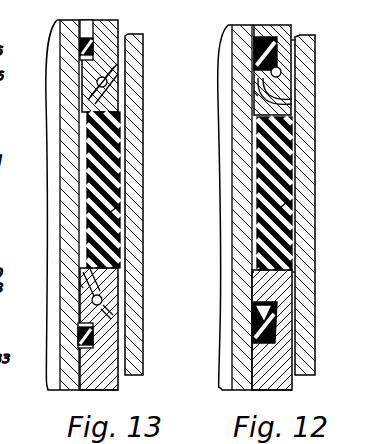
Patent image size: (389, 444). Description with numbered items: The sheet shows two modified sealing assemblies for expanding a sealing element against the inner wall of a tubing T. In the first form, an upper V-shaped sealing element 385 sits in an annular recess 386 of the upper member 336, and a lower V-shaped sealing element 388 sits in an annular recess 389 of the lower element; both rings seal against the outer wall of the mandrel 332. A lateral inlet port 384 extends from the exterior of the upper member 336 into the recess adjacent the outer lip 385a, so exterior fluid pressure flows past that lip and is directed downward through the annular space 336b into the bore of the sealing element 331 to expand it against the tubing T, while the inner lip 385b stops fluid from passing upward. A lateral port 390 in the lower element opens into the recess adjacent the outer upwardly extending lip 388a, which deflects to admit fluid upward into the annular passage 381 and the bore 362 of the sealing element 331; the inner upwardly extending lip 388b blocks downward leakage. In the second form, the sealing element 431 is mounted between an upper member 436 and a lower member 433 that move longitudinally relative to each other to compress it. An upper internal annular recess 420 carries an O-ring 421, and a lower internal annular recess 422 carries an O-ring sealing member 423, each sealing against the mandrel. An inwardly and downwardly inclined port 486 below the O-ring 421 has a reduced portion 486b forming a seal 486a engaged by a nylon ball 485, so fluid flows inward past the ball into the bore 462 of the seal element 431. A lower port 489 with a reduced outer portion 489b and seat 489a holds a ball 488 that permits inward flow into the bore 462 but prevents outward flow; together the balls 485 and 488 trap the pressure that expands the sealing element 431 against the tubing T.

In FIG. 13, the upper internal annular recess 420 is at (82, 34).
In FIG. 13, the O-ring 421 is at (84, 47).
In FIG. 13, the upper member 436 is at (84, 68).
In FIG. 13, the seal 486a is at (100, 83).
In FIG. 13, the reduced portion of port 486b is at (110, 78).
In FIG. 13, the ball 485 is at (108, 83).
In FIG. 13, the port 486 is at (90, 100).
In FIG. 13, the bore of seal element 462 is at (90, 150).
In FIG. 13, the sealing element 431 is at (113, 212).
In FIG. 13, the lower member 433 is at (107, 358).
In FIG. 13, the O-ring sealing member 423 is at (78, 328).
In FIG. 13, the lower internal annular recess 422 is at (78, 337).
In FIG. 13, the lower port 489 is at (82, 272).
In FIG. 13, the ball 488 is at (78, 285).
In FIG. 13, the seat 489a is at (80, 295).
In FIG. 13, the reduced outer portion of port 489b is at (112, 312).
In FIG. 13, the tubing T is at (140, 163).
In FIG. 12, the tubing T is at (308, 146).
In FIG. 12, the mandrel 332 is at (232, 173).
In FIG. 12, the upper V-shaped sealing element 385 is at (272, 30).
In FIG. 12, the lateral inlet port 384 is at (278, 63).
In FIG. 12, the upper member 336 is at (281, 72).
In FIG. 12, the outer lip 385a is at (272, 97).
In FIG. 12, the inner lip 385b is at (257, 68).
In FIG. 12, the annular space 336b is at (252, 95).
In FIG. 12, the annular recess 386 is at (296, 40).
In FIG. 12, the bore of sealing element 362 is at (260, 212).
In FIG. 12, the sealing element 331 is at (283, 205).
In FIG. 12, the lateral port 390 is at (297, 288).
In FIG. 12, the lower V-shaped sealing element 388 is at (252, 338).
In FIG. 12, the annular recess 389 is at (277, 323).
In FIG. 12, the outer upwardly extending lip 388a is at (308, 270).
In FIG. 12, the inner upwardly extending lip 388b is at (252, 305).
In FIG. 12, the annular passage 381 is at (253, 275).